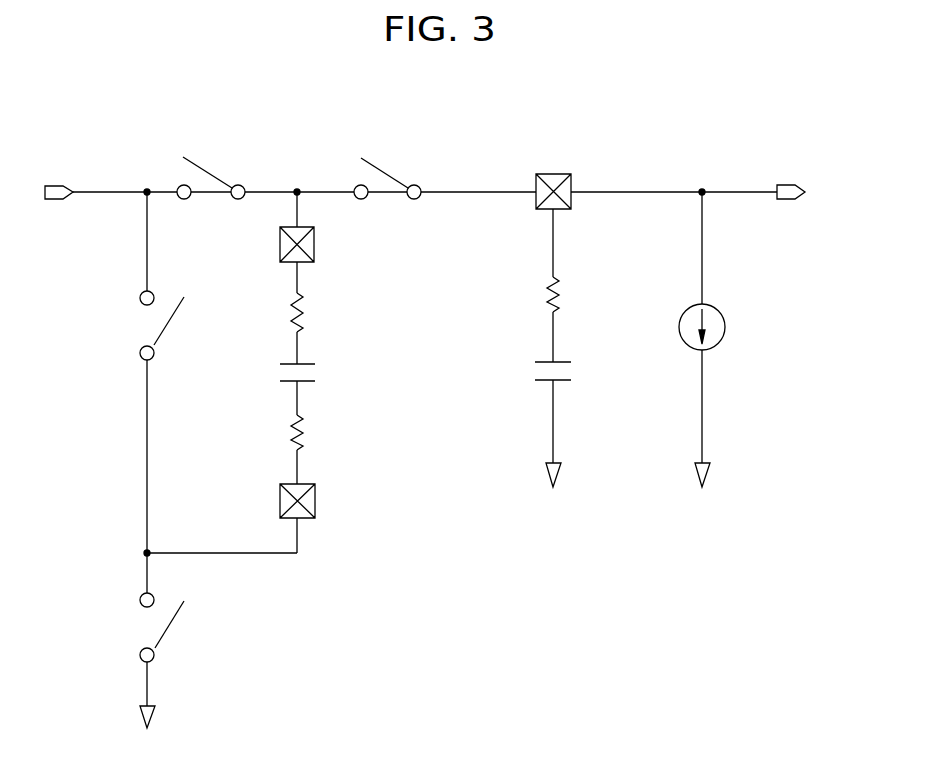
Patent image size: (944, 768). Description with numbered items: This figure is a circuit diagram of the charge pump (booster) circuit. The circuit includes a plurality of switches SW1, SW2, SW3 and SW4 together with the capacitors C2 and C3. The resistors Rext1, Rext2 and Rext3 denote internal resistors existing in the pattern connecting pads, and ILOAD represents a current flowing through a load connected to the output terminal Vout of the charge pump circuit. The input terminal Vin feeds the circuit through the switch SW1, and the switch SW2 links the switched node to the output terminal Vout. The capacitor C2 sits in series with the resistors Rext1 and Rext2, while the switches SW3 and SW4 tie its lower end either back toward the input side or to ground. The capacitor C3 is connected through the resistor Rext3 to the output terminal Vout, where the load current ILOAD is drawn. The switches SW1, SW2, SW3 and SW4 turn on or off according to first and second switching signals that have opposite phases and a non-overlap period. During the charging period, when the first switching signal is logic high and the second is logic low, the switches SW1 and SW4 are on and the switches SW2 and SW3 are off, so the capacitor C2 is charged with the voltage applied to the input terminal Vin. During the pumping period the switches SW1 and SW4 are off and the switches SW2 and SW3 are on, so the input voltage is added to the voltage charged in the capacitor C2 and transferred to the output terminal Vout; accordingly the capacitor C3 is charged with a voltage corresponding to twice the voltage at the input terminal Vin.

The input terminal Vin is at (58, 176).
The output terminal Vout is at (787, 176).
The switch SW1 is at (215, 165).
The switch SW2 is at (391, 165).
The switch SW3 is at (111, 325).
The switch SW4 is at (111, 627).
The internal resistor Rext1 is at (323, 312).
The internal resistor Rext2 is at (323, 432).
The internal resistor Rext3 is at (579, 294).
The capacitor C2 is at (313, 377).
The capacitor C3 is at (569, 376).
The load current ILOAD is at (730, 327).